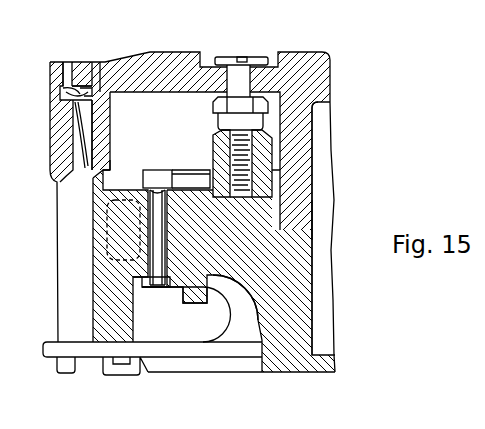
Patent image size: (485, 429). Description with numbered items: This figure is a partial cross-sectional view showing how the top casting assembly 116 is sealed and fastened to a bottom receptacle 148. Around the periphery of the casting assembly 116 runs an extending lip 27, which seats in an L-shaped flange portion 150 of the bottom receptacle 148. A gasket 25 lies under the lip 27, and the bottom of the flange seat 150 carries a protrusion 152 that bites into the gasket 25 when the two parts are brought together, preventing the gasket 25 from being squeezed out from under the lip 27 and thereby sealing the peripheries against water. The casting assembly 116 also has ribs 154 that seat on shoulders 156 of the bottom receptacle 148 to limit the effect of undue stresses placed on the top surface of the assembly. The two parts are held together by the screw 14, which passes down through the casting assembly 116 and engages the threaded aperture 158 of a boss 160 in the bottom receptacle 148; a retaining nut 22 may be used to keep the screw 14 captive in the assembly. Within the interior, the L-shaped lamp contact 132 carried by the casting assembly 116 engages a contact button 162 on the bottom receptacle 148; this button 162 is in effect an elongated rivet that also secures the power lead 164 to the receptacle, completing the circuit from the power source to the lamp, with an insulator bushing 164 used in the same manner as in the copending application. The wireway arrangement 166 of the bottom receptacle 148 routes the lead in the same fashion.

The screw 14 is at (250, 63).
The retaining nut 22 is at (218, 107).
The gasket 25 is at (90, 78).
The peripheral lip 27 is at (70, 70).
The casting assembly 116 is at (168, 52).
The lamp contact 132 is at (160, 170).
The bottom receptacle 148 is at (95, 243).
The L-shaped flange portion 150 is at (67, 97).
The protrusion 152 is at (75, 97).
The rib 154 is at (103, 122).
The shoulder 156 is at (107, 167).
The threaded aperture 158 is at (220, 162).
The boss 160 is at (218, 133).
The contact button 162 is at (147, 178).
The power lead 164 is at (192, 297).
The wireway arrangement 166 is at (250, 323).